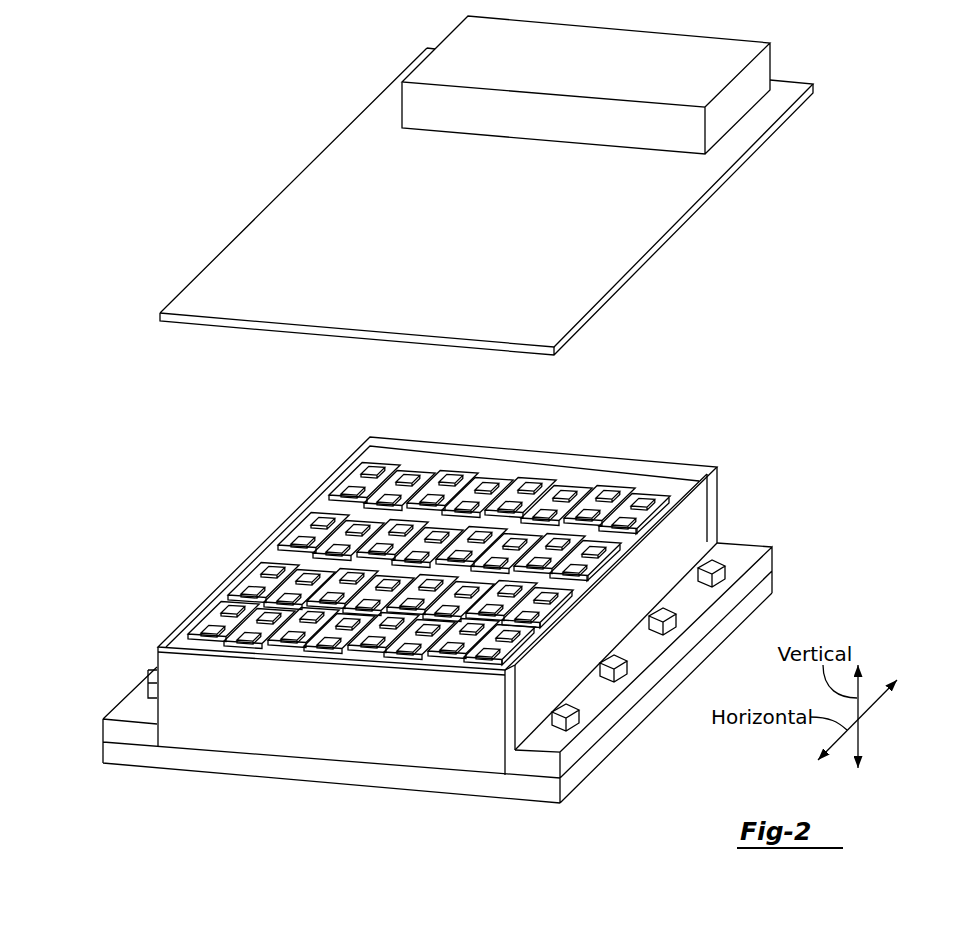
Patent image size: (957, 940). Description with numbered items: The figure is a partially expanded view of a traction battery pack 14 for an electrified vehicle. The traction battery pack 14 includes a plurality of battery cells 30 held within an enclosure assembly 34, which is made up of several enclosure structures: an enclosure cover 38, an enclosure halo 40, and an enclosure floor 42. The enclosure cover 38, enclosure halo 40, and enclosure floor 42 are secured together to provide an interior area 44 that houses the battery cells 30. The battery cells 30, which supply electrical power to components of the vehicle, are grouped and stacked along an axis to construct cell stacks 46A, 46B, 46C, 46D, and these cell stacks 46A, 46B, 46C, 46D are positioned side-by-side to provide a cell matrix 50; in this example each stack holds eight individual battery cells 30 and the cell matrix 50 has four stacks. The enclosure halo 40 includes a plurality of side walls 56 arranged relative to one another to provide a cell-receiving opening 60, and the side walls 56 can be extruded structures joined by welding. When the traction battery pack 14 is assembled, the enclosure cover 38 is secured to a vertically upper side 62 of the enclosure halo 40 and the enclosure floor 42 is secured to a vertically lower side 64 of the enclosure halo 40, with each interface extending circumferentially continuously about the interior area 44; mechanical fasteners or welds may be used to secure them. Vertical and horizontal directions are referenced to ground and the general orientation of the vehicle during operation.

The traction battery pack 14 is at (199, 185).
The enclosure cover 38 is at (334, 138).
The enclosure assembly 34 is at (201, 269).
The side walls 56 is at (343, 463).
The cell stack 46A is at (190, 630).
The cell stack 46B is at (233, 588).
The cell stack 46C is at (285, 537).
The cell stack 46D is at (337, 488).
The cell matrix 50 is at (368, 520).
The battery cells 30 is at (518, 470).
The cell-receiving opening 60 is at (565, 468).
The vertically upper side 62 is at (702, 470).
The interior area 44 is at (650, 497).
The vertically lower side 64 is at (347, 763).
The enclosure floor 42 is at (130, 767).
The enclosure halo 40 is at (142, 702).